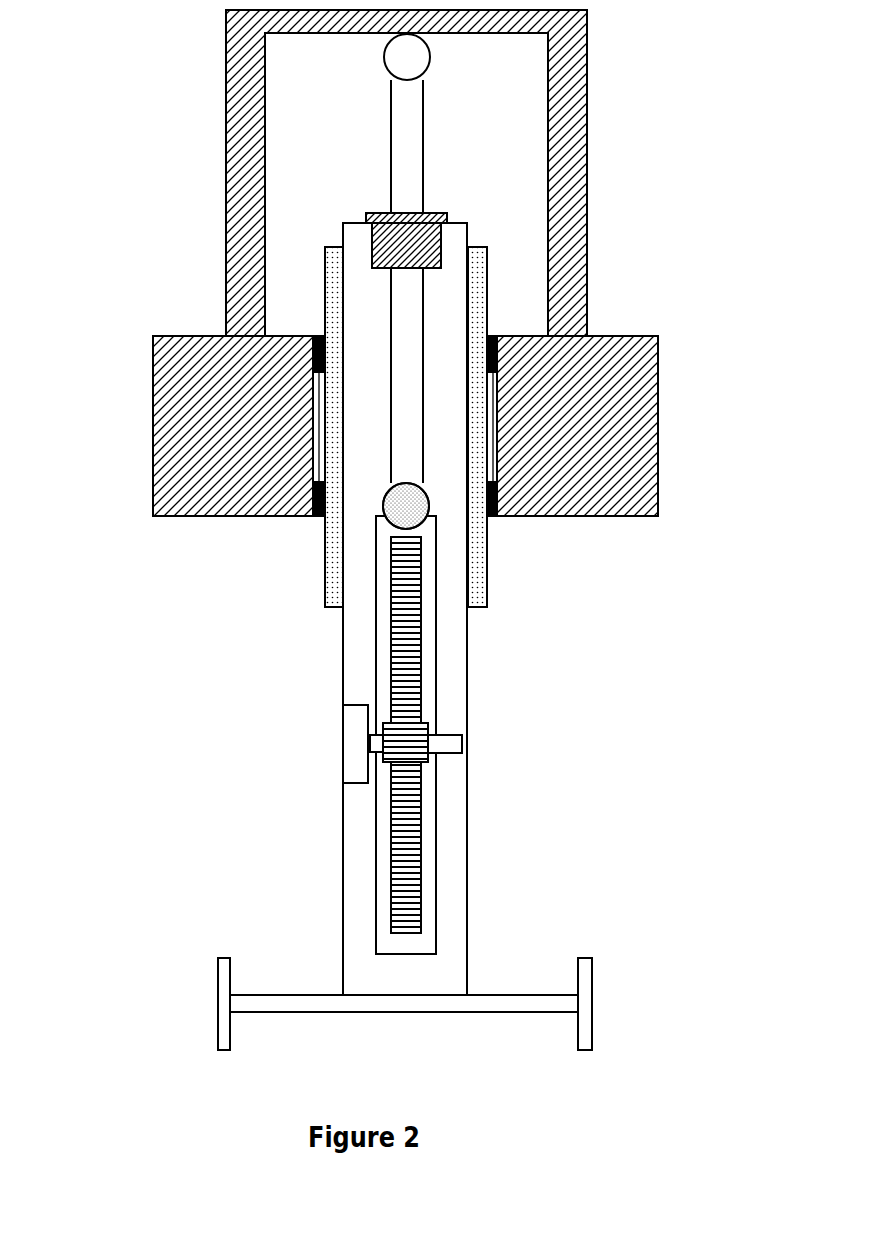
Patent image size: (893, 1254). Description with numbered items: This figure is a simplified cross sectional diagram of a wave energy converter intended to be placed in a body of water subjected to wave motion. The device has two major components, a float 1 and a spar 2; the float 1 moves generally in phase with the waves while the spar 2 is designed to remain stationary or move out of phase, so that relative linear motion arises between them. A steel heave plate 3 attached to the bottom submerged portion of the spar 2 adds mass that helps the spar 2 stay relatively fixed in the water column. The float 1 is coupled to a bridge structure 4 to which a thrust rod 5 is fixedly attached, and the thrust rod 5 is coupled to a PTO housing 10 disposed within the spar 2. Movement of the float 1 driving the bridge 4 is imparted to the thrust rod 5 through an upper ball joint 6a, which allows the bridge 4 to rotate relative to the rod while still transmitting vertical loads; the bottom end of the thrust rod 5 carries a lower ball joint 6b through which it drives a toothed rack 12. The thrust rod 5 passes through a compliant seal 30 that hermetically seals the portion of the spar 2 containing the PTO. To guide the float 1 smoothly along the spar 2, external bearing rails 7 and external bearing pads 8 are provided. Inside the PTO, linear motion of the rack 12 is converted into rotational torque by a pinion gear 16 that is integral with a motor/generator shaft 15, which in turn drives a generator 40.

The float 1 is at (446, 465).
The spar 2 is at (352, 609).
The heave plate 3 is at (444, 1027).
The bridge structure 4 is at (455, 173).
The thrust rod 5 is at (547, 281).
The upper ball joint 6a is at (248, 112).
The lower ball joint 6b is at (271, 565).
The external bearing rails 7 is at (458, 465).
The external bearing pads 8 is at (455, 467).
The PTO housing 10 is at (504, 735).
The rack assembly 12 is at (503, 744).
The motor/generator shaft 15 is at (515, 778).
The pinion gear 16 is at (497, 799).
The compliant seal 30 is at (239, 293).
The generator 40 is at (297, 771).